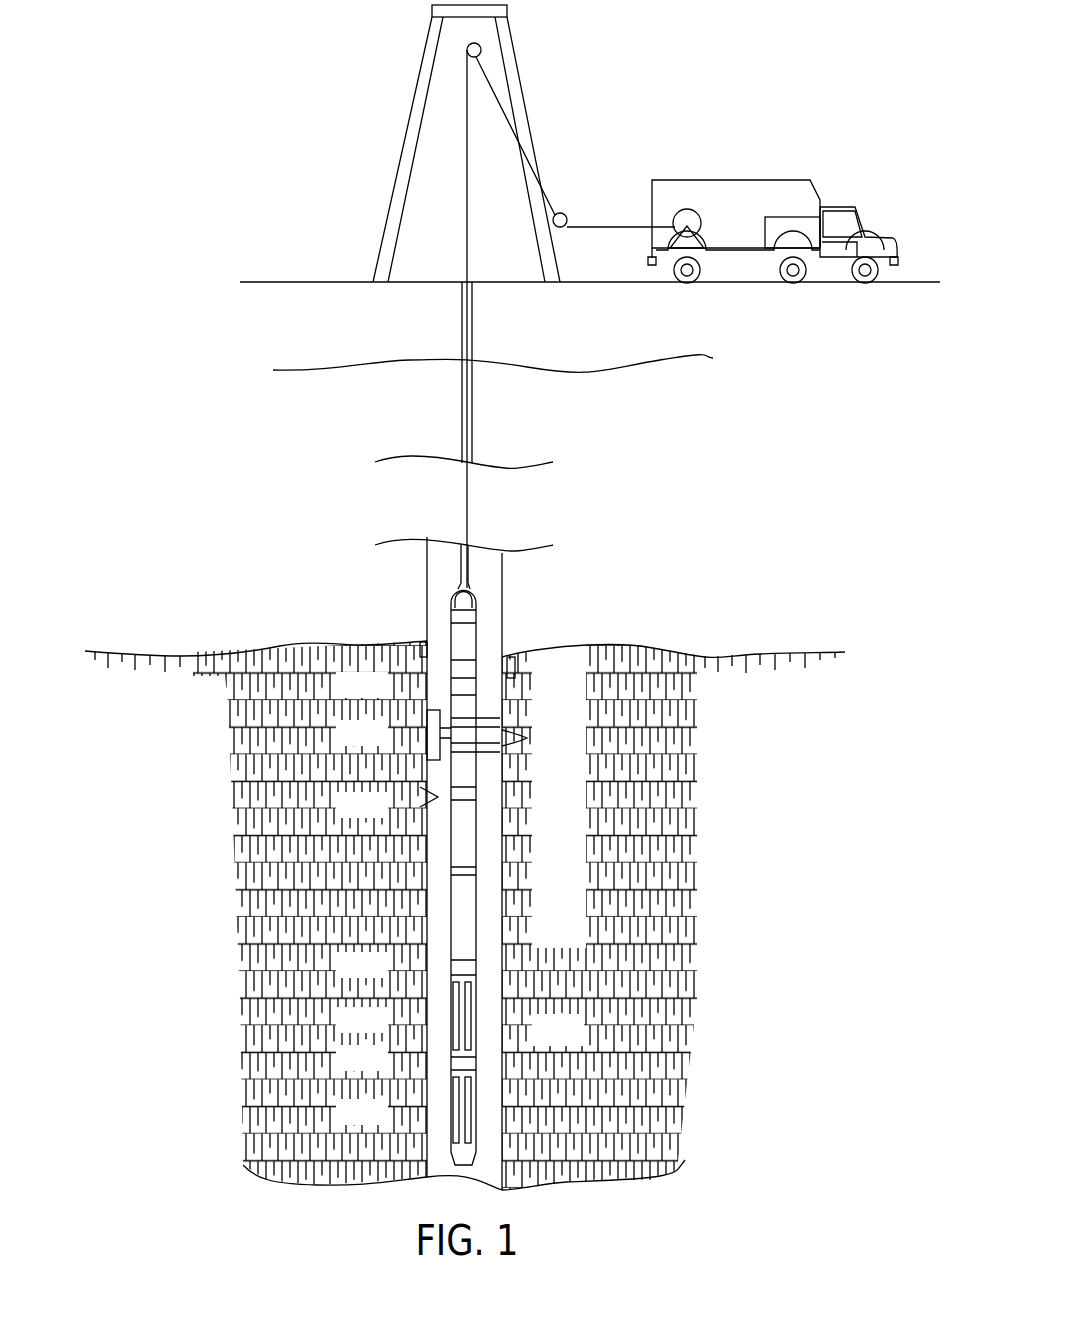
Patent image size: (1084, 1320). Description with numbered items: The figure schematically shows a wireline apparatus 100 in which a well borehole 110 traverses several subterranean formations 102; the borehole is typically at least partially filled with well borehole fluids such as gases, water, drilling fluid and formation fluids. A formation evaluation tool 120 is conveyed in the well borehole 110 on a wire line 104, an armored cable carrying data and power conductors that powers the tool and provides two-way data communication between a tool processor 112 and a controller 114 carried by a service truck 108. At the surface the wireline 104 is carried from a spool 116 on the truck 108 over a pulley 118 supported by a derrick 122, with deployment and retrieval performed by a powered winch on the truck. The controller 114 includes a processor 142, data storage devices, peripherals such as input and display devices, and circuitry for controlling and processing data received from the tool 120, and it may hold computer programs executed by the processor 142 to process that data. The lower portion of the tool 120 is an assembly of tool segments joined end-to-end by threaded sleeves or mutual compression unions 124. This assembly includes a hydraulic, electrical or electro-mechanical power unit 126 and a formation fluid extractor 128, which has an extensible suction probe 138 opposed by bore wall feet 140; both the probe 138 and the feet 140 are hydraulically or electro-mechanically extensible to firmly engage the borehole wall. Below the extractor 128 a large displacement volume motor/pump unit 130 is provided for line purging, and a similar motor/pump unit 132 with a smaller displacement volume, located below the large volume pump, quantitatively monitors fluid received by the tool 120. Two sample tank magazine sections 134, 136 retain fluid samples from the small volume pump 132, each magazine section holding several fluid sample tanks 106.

The wireline apparatus 100 is at (681, 548).
The subterranean formations 102 is at (670, 835).
The wire line 104 is at (473, 420).
The fluid sample tanks 106 is at (468, 1030).
The service truck 108 is at (742, 197).
The well borehole 110 is at (461, 395).
The tool processor 112 is at (482, 670).
The controller 114 is at (797, 215).
The spool 116 is at (680, 207).
The pulley 118 is at (467, 46).
The formation evaluation tool 120 is at (478, 708).
The derrick 122 is at (408, 120).
The mutual compression unions 124 is at (457, 688).
The power unit 126 is at (468, 635).
The formation fluid extractor 128 is at (462, 768).
The large displacement volume motor/pump unit 130 is at (460, 835).
The small displacement volume motor/pump unit 132 is at (465, 932).
The sample tank magazine section 134 is at (460, 1022).
The sample tank magazine section 136 is at (460, 1113).
The extensible suction probe 138 is at (430, 733).
The bore wall feet 140 is at (527, 738).
The processor 142 is at (807, 240).